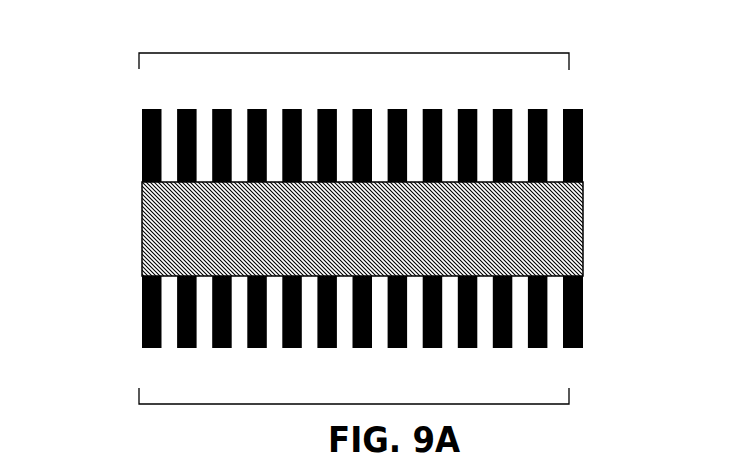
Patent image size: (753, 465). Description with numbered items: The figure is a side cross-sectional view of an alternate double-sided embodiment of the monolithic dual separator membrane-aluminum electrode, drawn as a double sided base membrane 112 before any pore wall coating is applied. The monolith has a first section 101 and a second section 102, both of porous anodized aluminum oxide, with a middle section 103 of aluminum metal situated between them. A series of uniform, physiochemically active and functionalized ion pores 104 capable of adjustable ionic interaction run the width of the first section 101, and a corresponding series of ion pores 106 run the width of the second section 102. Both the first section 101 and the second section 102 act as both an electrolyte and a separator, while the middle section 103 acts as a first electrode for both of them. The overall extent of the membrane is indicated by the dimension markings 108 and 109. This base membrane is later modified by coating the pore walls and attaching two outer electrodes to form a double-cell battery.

The first section 101 is at (583, 132).
The second section 102 is at (583, 302).
The middle section 103 is at (583, 228).
The ion pores 104 is at (239, 114).
The ion pores 106 is at (168, 332).
The width dimension 108 is at (384, 53).
The length dimension 109 is at (210, 404).
The capacitor structure 112 is at (92, 224).